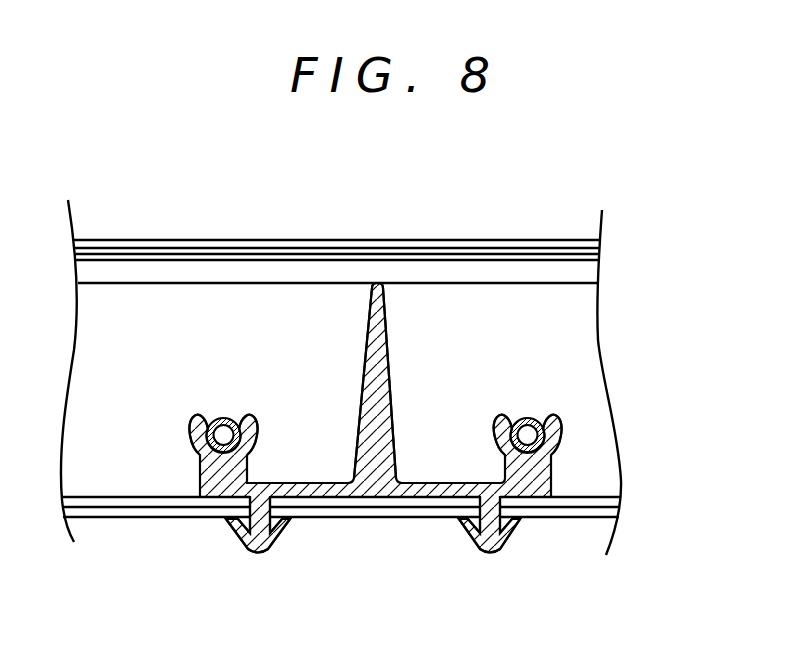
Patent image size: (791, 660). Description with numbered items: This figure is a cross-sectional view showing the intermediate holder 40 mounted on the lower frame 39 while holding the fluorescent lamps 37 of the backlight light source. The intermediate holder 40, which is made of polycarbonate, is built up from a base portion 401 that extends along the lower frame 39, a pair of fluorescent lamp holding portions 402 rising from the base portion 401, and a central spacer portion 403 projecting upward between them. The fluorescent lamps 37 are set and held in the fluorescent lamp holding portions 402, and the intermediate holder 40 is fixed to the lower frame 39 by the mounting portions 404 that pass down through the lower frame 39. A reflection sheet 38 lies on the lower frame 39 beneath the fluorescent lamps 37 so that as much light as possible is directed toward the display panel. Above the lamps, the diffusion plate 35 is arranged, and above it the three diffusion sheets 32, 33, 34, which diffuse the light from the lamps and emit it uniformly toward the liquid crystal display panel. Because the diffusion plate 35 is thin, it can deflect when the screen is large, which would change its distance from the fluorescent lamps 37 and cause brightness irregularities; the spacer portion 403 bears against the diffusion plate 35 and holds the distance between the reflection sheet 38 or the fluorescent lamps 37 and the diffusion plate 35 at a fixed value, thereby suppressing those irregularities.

The diffusion sheet 32 is at (600, 243).
The diffusion sheet 33 is at (598, 255).
The diffusion sheet 34 is at (598, 261).
The diffusion plate 35 is at (572, 280).
The fluorescent lamp 37 is at (535, 414).
The reflection sheet 38 is at (613, 503).
The lower frame 39 is at (608, 514).
The intermediate holder 40 is at (347, 472).
The base portion 401 is at (327, 497).
The fluorescent lamp holding portion 402 is at (555, 432).
The spacer portion 403 is at (393, 362).
The mounting portion 404 is at (490, 548).